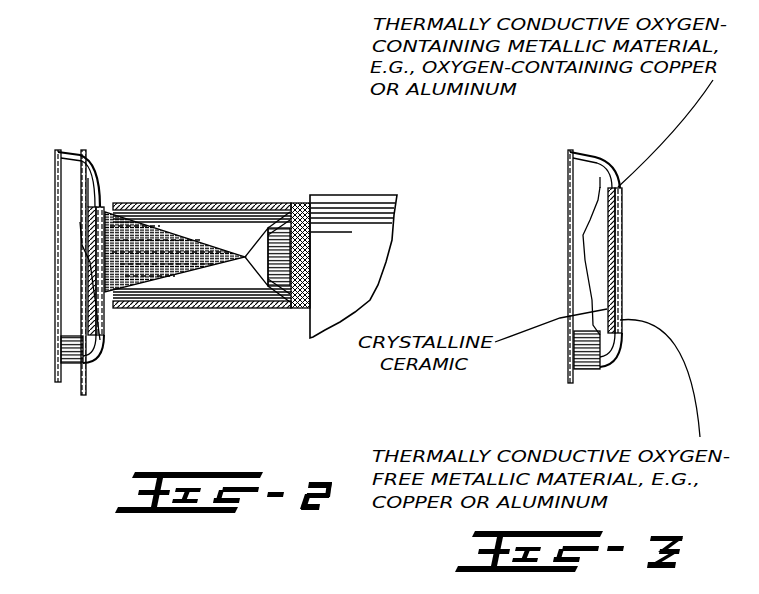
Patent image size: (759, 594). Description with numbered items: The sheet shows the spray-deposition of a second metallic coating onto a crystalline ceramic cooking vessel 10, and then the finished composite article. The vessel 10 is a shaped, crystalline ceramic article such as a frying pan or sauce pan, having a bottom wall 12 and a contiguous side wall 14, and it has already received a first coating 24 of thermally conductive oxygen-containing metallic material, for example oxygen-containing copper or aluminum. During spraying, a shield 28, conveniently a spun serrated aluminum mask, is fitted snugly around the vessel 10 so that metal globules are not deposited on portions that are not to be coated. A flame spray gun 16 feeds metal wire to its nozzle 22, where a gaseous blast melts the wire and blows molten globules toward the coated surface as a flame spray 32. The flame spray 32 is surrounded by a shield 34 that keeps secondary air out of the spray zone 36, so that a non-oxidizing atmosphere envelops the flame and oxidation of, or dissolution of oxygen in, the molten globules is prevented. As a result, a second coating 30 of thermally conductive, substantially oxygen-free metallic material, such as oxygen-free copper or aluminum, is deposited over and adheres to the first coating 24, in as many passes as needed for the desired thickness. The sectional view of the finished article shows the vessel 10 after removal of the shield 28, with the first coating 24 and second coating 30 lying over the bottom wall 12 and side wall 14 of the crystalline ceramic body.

In FIG. 2, the cooking vessel 10 is at (68, 148).
In FIG. 3, the cooking vessel 10 is at (590, 153).
In FIG. 2, the bottom wall 12 is at (88, 240).
In FIG. 3, the bottom wall 12 is at (608, 238).
In FIG. 2, the side wall 14 is at (62, 370).
In FIG. 3, the side wall 14 is at (588, 372).
In FIG. 2, the spray gun 16 is at (343, 213).
In FIG. 2, the nozzle 22 is at (258, 255).
In FIG. 2, the first coating 24 is at (93, 213).
In FIG. 3, the first coating 24 is at (622, 210).
In FIG. 2, the shield 28 is at (87, 150).
In FIG. 2, the second coating 30 is at (104, 300).
In FIG. 3, the second coating 30 is at (622, 273).
In FIG. 2, the flame spray 32 is at (137, 233).
In FIG. 2, the shield 34 is at (190, 205).
In FIG. 2, the spray zone 36 is at (240, 281).